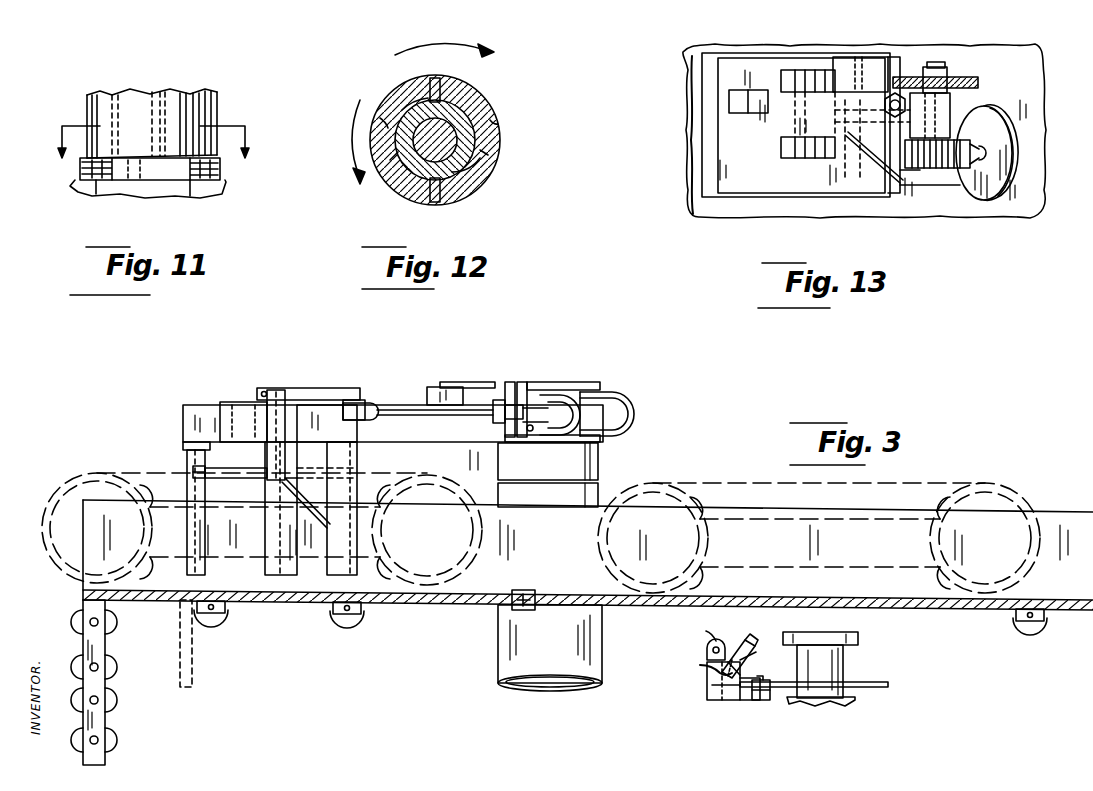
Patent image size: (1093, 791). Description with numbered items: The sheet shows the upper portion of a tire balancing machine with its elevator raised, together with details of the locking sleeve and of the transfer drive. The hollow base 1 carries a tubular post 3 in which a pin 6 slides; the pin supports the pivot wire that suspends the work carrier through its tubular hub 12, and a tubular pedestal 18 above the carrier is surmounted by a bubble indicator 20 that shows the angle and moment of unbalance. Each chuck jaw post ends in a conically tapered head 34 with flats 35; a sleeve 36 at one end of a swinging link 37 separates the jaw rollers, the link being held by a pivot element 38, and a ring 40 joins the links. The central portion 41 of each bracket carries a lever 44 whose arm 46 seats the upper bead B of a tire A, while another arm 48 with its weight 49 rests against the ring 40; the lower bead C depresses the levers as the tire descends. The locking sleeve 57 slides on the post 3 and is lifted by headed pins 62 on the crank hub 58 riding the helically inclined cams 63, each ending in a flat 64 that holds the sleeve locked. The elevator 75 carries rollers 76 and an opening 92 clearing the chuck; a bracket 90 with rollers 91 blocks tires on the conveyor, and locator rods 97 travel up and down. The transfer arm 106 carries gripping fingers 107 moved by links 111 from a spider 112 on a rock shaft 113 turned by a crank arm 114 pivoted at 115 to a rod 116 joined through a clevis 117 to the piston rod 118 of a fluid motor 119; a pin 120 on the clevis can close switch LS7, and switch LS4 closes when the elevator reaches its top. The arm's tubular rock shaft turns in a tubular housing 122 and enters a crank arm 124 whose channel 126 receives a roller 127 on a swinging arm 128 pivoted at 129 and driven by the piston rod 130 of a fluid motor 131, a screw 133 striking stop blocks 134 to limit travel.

In FIG. 13, the base 1 is at (686, 126).
In FIG. 11, the tubular post 3 is at (205, 94).
In FIG. 12, the tubular post 3 is at (478, 114).
In FIG. 11, the pin 6 is at (125, 95).
In FIG. 12, the pin 6 is at (470, 108).
In FIG. 11, the tubular hub 12 is at (149, 142).
In FIG. 3, the tubular pedestal 18 is at (842, 660).
In FIG. 3, the bubble indicator 20 is at (856, 640).
In FIG. 3, the conically tapered head 34 is at (712, 638).
In FIG. 3, the flats 35 is at (706, 650).
In FIG. 3, the sleeve 36 is at (708, 682).
In FIG. 3, the swinging link 37 is at (758, 678).
In FIG. 3, the pivot element 38 is at (764, 678).
In FIG. 3, the ring 40 is at (888, 683).
In FIG. 3, the central portion of bracket 41 is at (712, 692).
In FIG. 3, the lever 44 is at (750, 640).
In FIG. 3, the arm 46 is at (700, 666).
In FIG. 3, the arm 48 is at (732, 660).
In FIG. 3, the weight 49 is at (752, 650).
In FIG. 11, the locking sleeve 57 is at (218, 105).
In FIG. 12, the locking sleeve 57 is at (498, 171).
In FIG. 11, the hub 58 is at (156, 194).
In FIG. 11, the headed pins 62 is at (82, 180).
In FIG. 12, the headed pins 62 is at (498, 122).
In FIG. 11, the helically inclined cams 63 is at (218, 176).
In FIG. 12, the helically inclined cams 63 is at (468, 74).
In FIG. 11, the flat 64 is at (118, 182).
In FIG. 12, the flat 64 is at (384, 118).
In FIG. 3, the elevator 75 is at (1018, 508).
In FIG. 3, the rollers 76 is at (222, 604).
In FIG. 3, the bracket 90 is at (106, 716).
In FIG. 3, the rollers 91 is at (106, 690).
In FIG. 3, the opening 92 is at (662, 606).
In FIG. 3, the work piece locator rods 97 is at (178, 630).
In FIG. 3, the transfer arm 106 is at (236, 402).
In FIG. 3, the gripping fingers 107 is at (362, 558).
In FIG. 3, the links 111 is at (214, 478).
In FIG. 3, the spider 112 is at (280, 480).
In FIG. 3, the rock shaft 113 is at (286, 392).
In FIG. 3, the crank arm 114 is at (330, 388).
In FIG. 3, the pivotal connection 115 is at (362, 400).
In FIG. 3, the rod 116 is at (380, 418).
In FIG. 3, the clevis 117 is at (494, 420).
In FIG. 3, the piston rod 118 is at (540, 394).
In FIG. 3, the fluid motor 119 is at (625, 412).
In FIG. 3, the pin 120 is at (516, 382).
In FIG. 3, the tubular housing 122 is at (658, 498).
In FIG. 13, the crank arm 124 is at (960, 73).
In FIG. 13, the channel 126 is at (944, 70).
In FIG. 13, the roller 127 is at (934, 68).
In FIG. 13, the swinging arm 128 is at (874, 154).
In FIG. 13, the pivot 129 is at (801, 158).
In FIG. 13, the piston rod 130 is at (976, 170).
In FIG. 13, the fluid motor 131 is at (998, 132).
In FIG. 13, the screw 133 is at (886, 92).
In FIG. 13, the stop blocks 134 is at (746, 113).
In FIG. 3, the switch LS4 is at (528, 590).
In FIG. 3, the switch LS7 is at (436, 387).
In FIG. 3, the tire A is at (1014, 492).
In FIG. 3, the upper bead B is at (942, 520).
In FIG. 3, the lower bead C is at (924, 570).